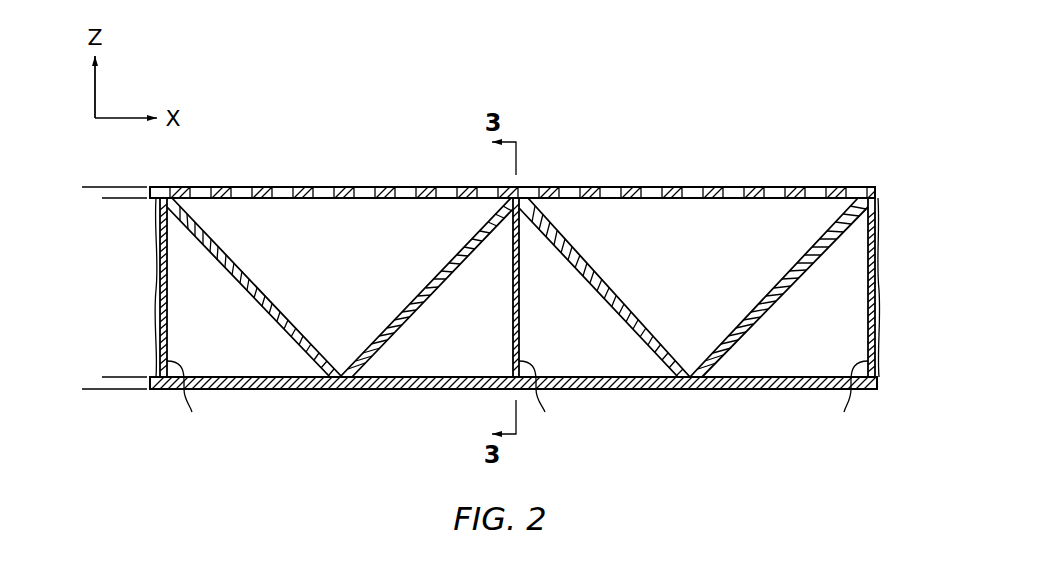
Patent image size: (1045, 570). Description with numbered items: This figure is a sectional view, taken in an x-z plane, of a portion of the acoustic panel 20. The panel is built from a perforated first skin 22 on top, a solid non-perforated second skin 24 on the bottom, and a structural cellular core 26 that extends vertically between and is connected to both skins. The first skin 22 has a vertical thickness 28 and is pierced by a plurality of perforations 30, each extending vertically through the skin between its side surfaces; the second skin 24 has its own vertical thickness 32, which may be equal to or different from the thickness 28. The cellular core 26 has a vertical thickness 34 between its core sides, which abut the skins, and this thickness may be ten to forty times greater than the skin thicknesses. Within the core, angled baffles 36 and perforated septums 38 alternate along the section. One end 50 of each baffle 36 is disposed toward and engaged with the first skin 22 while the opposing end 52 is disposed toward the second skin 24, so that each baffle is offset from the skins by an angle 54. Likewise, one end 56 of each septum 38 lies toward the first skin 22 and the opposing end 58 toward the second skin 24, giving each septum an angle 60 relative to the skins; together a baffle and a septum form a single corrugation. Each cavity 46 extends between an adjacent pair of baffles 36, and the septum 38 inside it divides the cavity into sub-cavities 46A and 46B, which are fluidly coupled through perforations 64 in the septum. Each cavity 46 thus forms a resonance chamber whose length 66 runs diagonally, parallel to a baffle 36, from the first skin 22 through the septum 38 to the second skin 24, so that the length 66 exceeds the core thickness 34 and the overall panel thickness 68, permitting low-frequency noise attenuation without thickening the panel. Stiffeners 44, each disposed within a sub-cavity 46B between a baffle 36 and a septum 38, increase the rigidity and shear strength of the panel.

The acoustic panel 20 is at (828, 134).
The first skin 22 is at (861, 184).
The second skin 24 is at (862, 393).
The cellular core 26 is at (881, 198).
The vertical thickness 28 is at (109, 235).
The perforations 30 is at (362, 186).
The vertical thickness 32 is at (109, 350).
The vertical thickness 34 is at (131, 200).
The baffles 36 is at (255, 303).
The perforated septums 38 is at (428, 297).
The stiffeners 44 is at (517, 401).
The cavities 46 is at (262, 360).
The sub-cavity 46A is at (356, 250).
The sub-cavity 46B is at (218, 310).
The end of baffle 50 is at (523, 187).
The opposing end of baffle 52 is at (337, 386).
The angle 54 is at (561, 227).
The end of septum 56 is at (510, 187).
The opposing end of septum 58 is at (343, 386).
The angle 60 is at (471, 228).
The perforations 64 is at (393, 320).
The length of resonance chamber 66 is at (210, 202).
The thickness of panel 68 is at (83, 189).